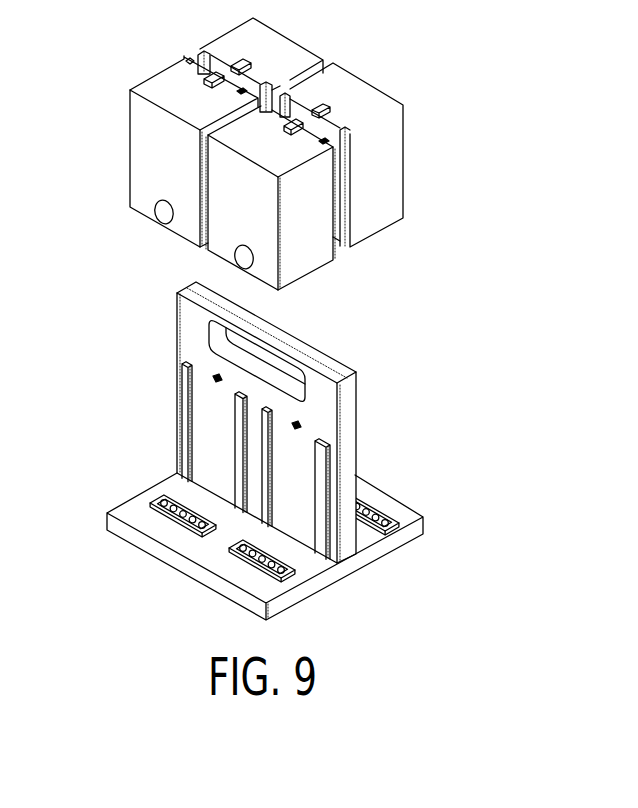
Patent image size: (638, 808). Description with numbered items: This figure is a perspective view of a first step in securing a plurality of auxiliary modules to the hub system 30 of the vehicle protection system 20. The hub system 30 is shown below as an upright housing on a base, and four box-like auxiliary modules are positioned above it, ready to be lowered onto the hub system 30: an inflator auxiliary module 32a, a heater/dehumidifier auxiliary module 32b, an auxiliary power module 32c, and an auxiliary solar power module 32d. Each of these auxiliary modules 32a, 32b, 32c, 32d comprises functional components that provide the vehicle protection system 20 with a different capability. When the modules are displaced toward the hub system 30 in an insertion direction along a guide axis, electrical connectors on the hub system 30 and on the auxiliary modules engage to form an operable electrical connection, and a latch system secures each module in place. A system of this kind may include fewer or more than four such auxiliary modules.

The vehicle protection system 20 is at (443, 397).
The hub system 30 is at (111, 438).
The inflator auxiliary module 32a is at (307, 263).
The heater/dehumidifier auxiliary module 32b is at (131, 148).
The auxiliary power module 32c is at (377, 100).
The auxiliary solar power module 32d is at (296, 53).